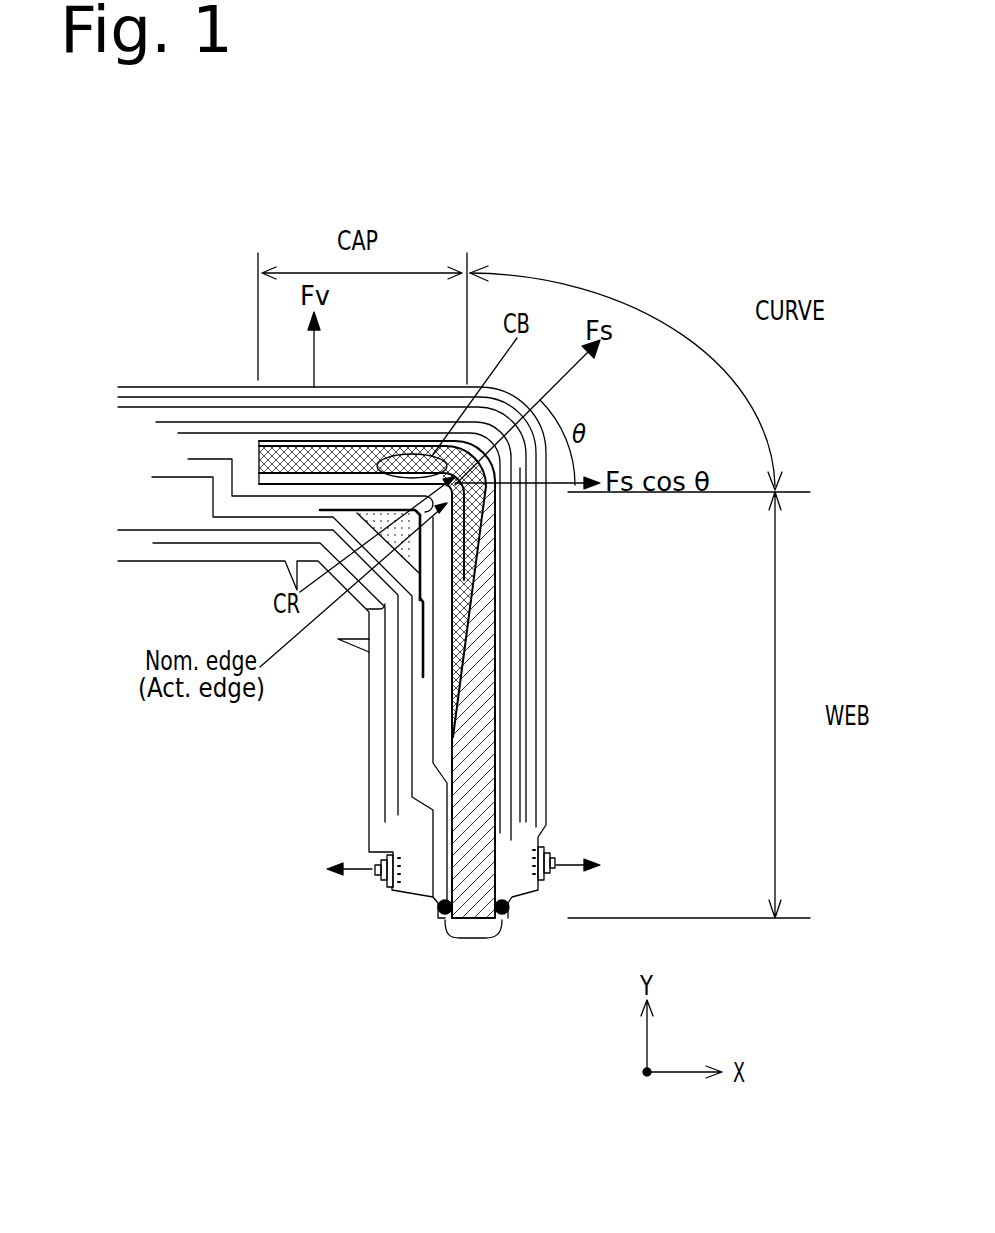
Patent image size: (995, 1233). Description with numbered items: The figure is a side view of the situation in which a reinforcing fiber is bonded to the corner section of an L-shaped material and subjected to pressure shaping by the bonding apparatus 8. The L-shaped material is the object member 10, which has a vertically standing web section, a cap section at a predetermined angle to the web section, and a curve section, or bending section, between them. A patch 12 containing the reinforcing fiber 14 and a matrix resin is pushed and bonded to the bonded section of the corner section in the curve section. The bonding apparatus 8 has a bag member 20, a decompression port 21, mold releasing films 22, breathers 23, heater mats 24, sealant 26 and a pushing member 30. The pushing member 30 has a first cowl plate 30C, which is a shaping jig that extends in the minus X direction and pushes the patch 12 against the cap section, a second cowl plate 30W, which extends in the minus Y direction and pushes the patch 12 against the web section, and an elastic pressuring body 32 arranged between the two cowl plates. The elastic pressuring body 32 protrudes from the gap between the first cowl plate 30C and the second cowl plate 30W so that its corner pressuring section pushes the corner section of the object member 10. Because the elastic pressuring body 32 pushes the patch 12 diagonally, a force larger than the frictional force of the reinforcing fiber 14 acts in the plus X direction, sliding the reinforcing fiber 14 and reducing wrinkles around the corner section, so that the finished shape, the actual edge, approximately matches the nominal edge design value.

The bonding apparatus 8 is at (187, 250).
The object member 10 is at (356, 444).
The patch 12 is at (290, 460).
The reinforcing fiber 14 is at (407, 460).
The bag member 20 is at (368, 800).
The decompression port 21 is at (368, 851).
The mold releasing films 22 is at (188, 459).
The breathers 23 is at (118, 397).
The heater mats 24 is at (150, 407).
The sealant 26 is at (473, 943).
The pushing member 30 is at (299, 625).
The first cowl plate 30C is at (320, 510).
The second cowl plate 30W is at (423, 665).
The elastic pressuring body 32 is at (365, 605).